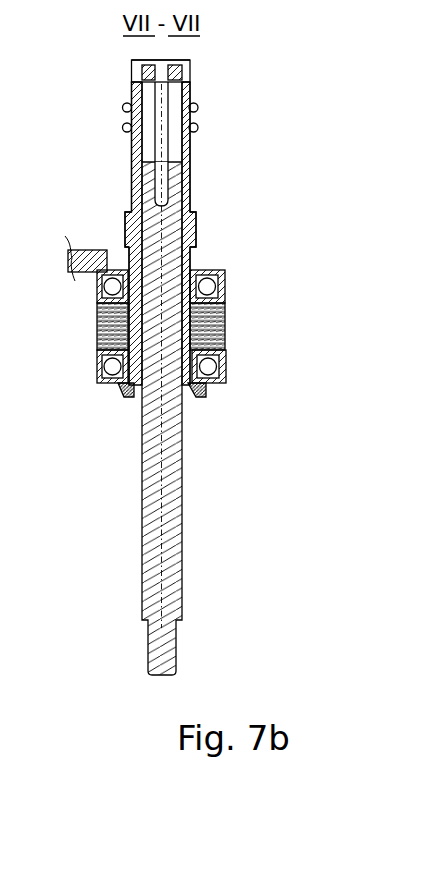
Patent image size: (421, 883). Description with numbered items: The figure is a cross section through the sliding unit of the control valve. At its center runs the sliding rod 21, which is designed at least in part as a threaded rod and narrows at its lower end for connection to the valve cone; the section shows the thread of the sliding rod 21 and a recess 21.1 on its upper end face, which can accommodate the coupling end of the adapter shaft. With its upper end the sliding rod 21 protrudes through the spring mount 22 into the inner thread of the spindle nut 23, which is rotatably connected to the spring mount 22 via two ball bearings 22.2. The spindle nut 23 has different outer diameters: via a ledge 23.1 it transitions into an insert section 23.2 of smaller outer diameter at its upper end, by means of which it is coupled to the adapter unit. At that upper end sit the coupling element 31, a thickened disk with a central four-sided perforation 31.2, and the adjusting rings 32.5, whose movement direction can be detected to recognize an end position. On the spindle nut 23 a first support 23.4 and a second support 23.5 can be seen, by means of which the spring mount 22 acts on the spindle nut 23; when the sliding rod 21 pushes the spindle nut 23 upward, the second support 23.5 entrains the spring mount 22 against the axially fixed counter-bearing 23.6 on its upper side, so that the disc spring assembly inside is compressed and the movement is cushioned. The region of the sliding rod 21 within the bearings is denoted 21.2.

The sliding rod 21 is at (176, 545).
The recess 21.1 is at (147, 177).
The shaft bearing section 21.2 is at (193, 268).
The spring mount 22 is at (88, 335).
The ball bearings 22.2 is at (207, 285).
The spindle nut 23 is at (190, 193).
The ledge 23.1 is at (190, 150).
The insert section 23.2 is at (135, 100).
The first support 23.4 is at (127, 270).
The second support 23.5 is at (207, 390).
The counter-bearing 23.6 is at (72, 265).
The coupling element 31 is at (137, 72).
The perforation 31.2 is at (180, 62).
The adjusting rings 32.5 is at (197, 128).